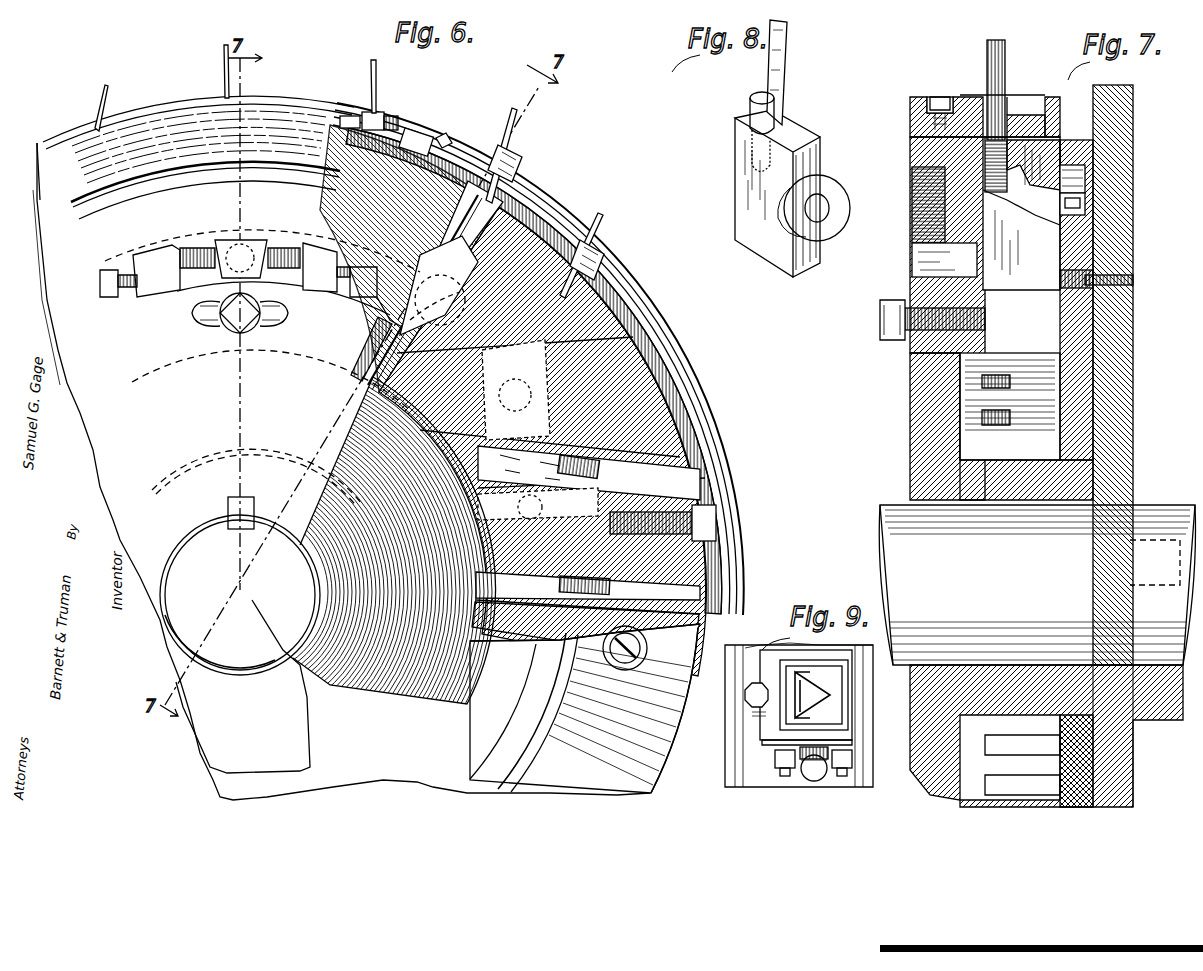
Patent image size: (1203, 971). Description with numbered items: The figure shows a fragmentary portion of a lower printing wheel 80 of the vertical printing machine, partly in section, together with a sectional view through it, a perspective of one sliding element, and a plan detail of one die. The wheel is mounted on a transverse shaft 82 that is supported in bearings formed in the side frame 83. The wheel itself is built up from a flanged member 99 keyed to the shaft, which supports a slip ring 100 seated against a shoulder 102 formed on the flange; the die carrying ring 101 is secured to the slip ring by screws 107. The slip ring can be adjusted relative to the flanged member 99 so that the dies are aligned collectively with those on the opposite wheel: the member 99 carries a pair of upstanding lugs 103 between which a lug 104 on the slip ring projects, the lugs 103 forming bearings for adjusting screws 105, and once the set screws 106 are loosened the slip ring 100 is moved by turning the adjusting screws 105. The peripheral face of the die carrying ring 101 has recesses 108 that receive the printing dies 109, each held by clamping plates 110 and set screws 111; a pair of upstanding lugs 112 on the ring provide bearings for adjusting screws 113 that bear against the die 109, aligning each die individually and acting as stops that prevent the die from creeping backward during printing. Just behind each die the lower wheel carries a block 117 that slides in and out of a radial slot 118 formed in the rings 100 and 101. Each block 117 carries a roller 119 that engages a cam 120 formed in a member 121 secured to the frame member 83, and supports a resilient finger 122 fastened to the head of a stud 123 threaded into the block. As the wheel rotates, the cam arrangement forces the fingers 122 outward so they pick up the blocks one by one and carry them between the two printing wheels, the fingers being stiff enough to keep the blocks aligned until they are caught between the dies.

In FIG. 6, the lower printing wheel 80 is at (70, 392).
In FIG. 7, the lower printing wheel 80 is at (890, 376).
In FIG. 6, the transverse shaft 82 is at (186, 630).
In FIG. 7, the transverse shaft 82 is at (888, 508).
In FIG. 7, the side frame 83 is at (1135, 96).
In FIG. 6, the flanged member 99 is at (64, 370).
In FIG. 7, the flanged member 99 is at (908, 415).
In FIG. 6, the slip ring 100 is at (75, 170).
In FIG. 7, the slip ring 100 is at (950, 155).
In FIG. 6, the die carrying ring 101 is at (80, 135).
In FIG. 7, the die carrying ring 101 is at (910, 116).
In FIG. 7, the shoulder 102 is at (920, 358).
In FIG. 6, the upstanding lugs 103 is at (158, 252).
In FIG. 6, the lug 104 is at (240, 240).
In FIG. 7, the lug 104 is at (920, 258).
In FIG. 6, the adjusting screws 105 is at (197, 246).
In FIG. 6, the set screws 106 is at (245, 338).
In FIG. 7, the set screws 106 is at (880, 322).
In FIG. 6, the screws 107 is at (650, 312).
In FIG. 7, the recesses 108 is at (1074, 86).
In FIG. 9, the recesses 108 is at (852, 770).
In FIG. 6, the printing die 109 is at (418, 130).
In FIG. 7, the printing die 109 is at (1022, 97).
In FIG. 9, the printing die 109 is at (780, 730).
In FIG. 6, the clamping plates 110 is at (462, 162).
In FIG. 7, the clamping plates 110 is at (925, 97).
In FIG. 9, the clamping plates 110 is at (755, 736).
In FIG. 6, the set screws 111 is at (448, 138).
In FIG. 7, the set screws 111 is at (950, 88).
In FIG. 9, the set screws 111 is at (748, 702).
In FIG. 6, the upstanding lugs 112 is at (378, 118).
In FIG. 9, the upstanding lugs 112 is at (775, 762).
In FIG. 6, the adjusting screws 113 is at (398, 125).
In FIG. 9, the adjusting screws 113 is at (785, 778).
In FIG. 6, the block 117 is at (440, 238).
In FIG. 8, the block 117 is at (735, 180).
In FIG. 7, the block 117 is at (1100, 245).
In FIG. 6, the radial slot 118 is at (360, 375).
In FIG. 7, the radial slot 118 is at (1075, 165).
In FIG. 6, the roller 119 is at (415, 240).
In FIG. 8, the roller 119 is at (845, 216).
In FIG. 7, the roller 119 is at (1085, 182).
In FIG. 6, the cam 120 is at (478, 650).
In FIG. 7, the cam 120 is at (1085, 212).
In FIG. 6, the member 121 is at (592, 778).
In FIG. 7, the member 121 is at (1095, 298).
In FIG. 6, the resilient finger 122 is at (368, 64).
In FIG. 8, the resilient finger 122 is at (768, 74).
In FIG. 7, the resilient finger 122 is at (987, 46).
In FIG. 9, the resilient finger 122 is at (812, 770).
In FIG. 6, the stud 123 is at (522, 172).
In FIG. 8, the stud 123 is at (752, 99).
In FIG. 7, the stud 123 is at (990, 112).
In FIG. 9, the stud 123 is at (817, 782).